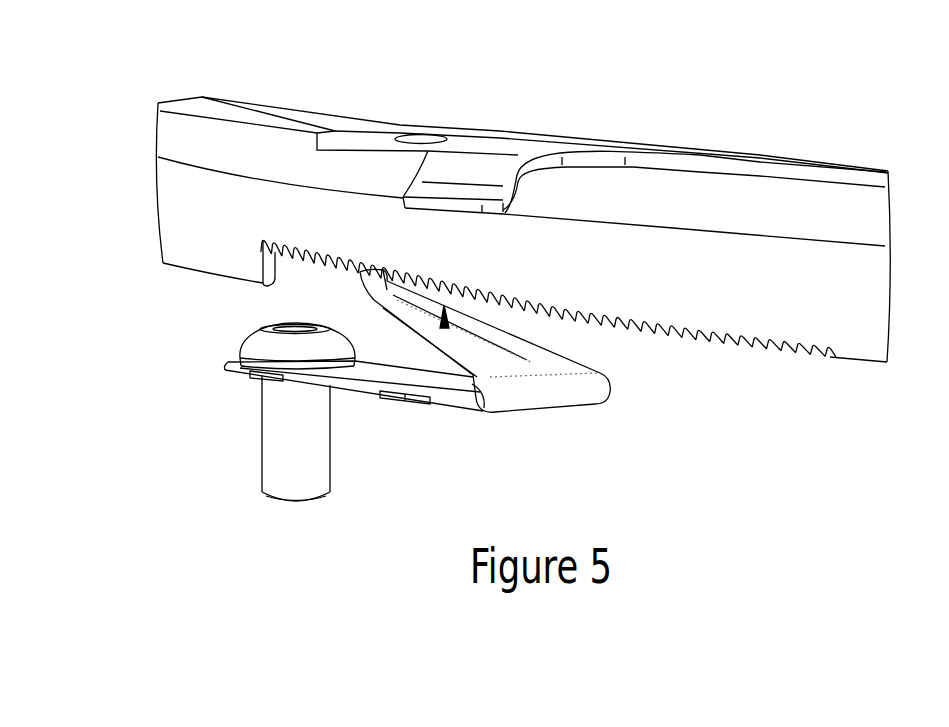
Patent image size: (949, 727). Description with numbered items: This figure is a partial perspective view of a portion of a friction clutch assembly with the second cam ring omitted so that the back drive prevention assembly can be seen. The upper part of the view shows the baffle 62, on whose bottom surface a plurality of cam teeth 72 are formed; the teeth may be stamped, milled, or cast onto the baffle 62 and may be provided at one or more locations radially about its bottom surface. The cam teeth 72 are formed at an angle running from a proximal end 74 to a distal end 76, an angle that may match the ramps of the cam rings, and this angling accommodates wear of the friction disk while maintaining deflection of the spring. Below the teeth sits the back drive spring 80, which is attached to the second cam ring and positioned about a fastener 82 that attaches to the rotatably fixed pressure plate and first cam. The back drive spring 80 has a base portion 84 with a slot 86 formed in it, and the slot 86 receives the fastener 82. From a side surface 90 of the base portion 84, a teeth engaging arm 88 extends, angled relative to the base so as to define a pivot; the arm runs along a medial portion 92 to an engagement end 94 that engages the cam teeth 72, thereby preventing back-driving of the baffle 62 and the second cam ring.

The baffle 62 is at (866, 247).
The cam teeth 72 is at (697, 341).
The proximal end 74 is at (263, 258).
The distal end 76 is at (826, 350).
The back drive spring 80 is at (528, 405).
The fastener 82 is at (278, 450).
The base portion 84 is at (382, 400).
The slot 86 is at (250, 374).
The teeth engaging arm 88 is at (445, 328).
The side surface 90 is at (485, 413).
The medial portion 92 is at (480, 330).
The engagement end 94 is at (387, 287).